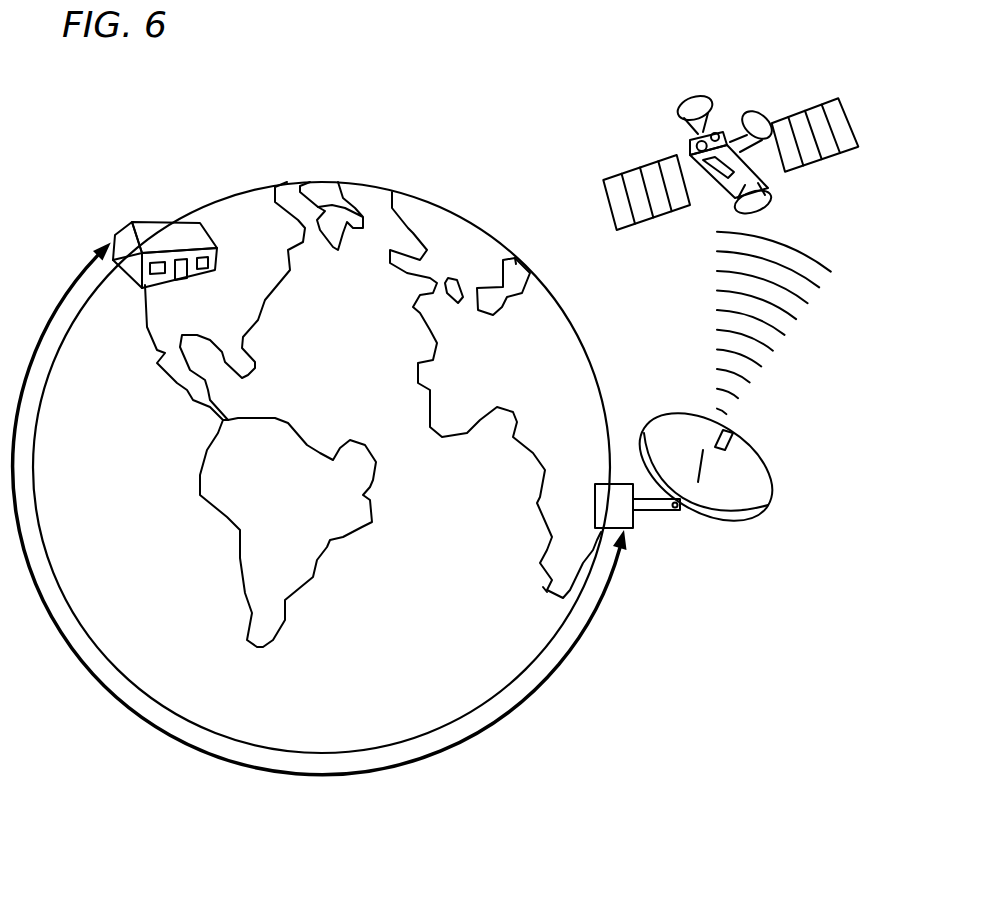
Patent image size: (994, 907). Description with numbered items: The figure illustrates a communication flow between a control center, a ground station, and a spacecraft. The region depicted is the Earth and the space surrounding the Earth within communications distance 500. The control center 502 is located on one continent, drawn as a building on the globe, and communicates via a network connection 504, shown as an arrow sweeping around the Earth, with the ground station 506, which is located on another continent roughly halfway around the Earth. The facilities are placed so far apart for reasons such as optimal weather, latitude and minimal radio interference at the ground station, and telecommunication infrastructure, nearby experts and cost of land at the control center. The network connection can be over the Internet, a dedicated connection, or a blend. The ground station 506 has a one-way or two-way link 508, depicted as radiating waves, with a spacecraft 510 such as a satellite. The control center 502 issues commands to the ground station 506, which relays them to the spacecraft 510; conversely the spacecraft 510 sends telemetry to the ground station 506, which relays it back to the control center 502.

The communications distance region 500 is at (317, 151).
The control center 502 is at (148, 230).
The network connection 504 is at (157, 733).
The ground station 506 is at (710, 511).
The link 508 is at (717, 310).
The spacecraft 510 is at (690, 142).